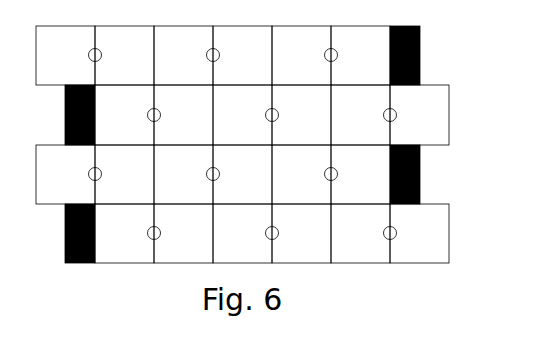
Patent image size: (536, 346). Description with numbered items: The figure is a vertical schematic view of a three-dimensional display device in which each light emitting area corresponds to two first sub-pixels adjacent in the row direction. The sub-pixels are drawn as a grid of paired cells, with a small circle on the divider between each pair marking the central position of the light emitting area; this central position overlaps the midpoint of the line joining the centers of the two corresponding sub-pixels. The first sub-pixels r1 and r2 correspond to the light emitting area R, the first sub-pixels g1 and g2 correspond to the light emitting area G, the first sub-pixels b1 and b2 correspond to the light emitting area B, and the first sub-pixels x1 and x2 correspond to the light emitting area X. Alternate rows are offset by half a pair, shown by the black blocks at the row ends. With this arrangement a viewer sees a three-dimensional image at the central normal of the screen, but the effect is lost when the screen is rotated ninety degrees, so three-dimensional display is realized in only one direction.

The first sub-pixel r1 is at (183, 115).
The first sub-pixel r2 is at (242, 115).
The first sub-pixel g1 is at (183, 115).
The first sub-pixel g2 is at (242, 115).
The first sub-pixel b1 is at (242, 174).
The first sub-pixel b2 is at (301, 174).
The first sub-pixel x1 is at (242, 174).
The first sub-pixel x2 is at (301, 174).